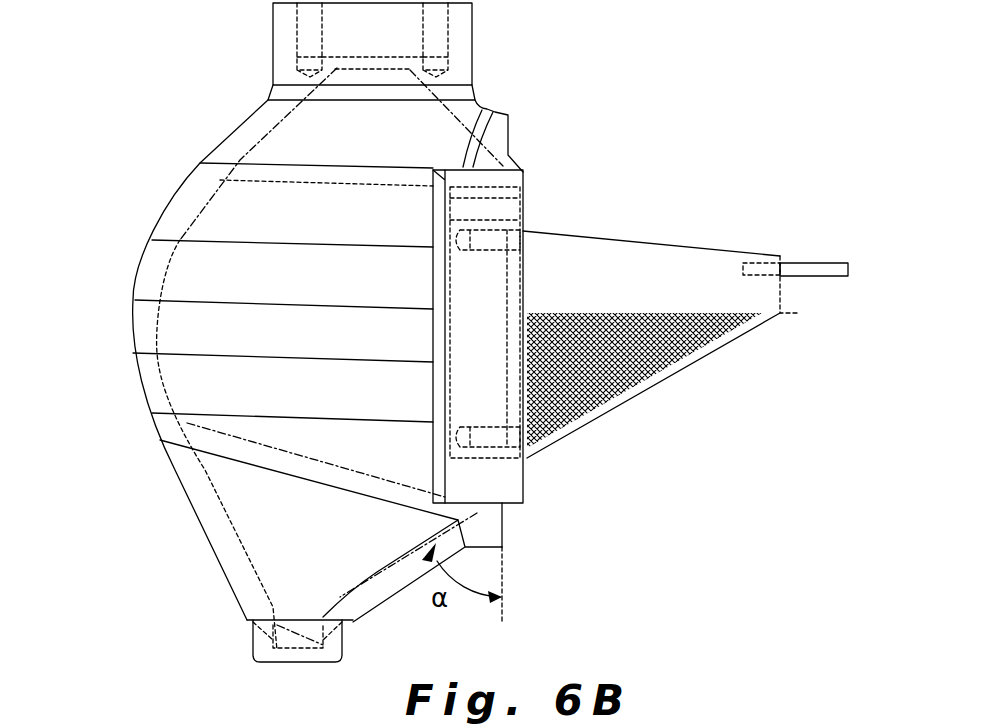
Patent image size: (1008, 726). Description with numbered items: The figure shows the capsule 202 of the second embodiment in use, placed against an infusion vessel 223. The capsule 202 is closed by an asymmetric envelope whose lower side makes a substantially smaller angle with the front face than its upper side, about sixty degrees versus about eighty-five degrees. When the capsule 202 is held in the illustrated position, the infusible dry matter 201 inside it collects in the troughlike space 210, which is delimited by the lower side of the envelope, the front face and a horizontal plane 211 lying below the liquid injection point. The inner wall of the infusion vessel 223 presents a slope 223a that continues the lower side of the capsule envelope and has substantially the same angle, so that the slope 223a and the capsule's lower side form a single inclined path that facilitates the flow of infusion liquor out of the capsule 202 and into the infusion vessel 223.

The infusion vessel 223 is at (170, 130).
The slope 223a is at (377, 572).
The capsule 202 is at (639, 230).
The infusible dry matter 201 is at (600, 410).
The troughlike space 210 is at (650, 383).
The horizontal plane 211 is at (788, 313).